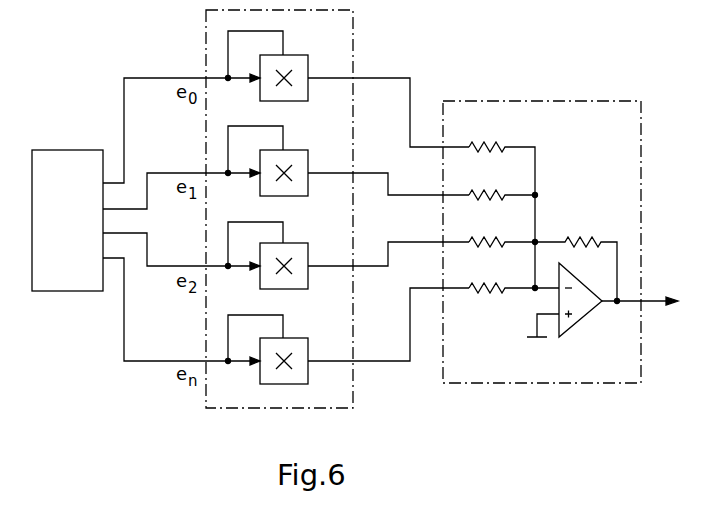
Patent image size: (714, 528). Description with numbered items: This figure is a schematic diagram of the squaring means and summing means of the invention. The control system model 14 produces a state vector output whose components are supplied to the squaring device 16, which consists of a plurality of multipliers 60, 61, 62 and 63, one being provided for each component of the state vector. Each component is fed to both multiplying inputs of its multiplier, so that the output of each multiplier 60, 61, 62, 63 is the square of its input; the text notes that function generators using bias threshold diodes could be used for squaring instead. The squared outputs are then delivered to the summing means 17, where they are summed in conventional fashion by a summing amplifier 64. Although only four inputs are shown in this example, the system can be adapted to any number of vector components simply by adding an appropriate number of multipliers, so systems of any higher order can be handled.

The control system model 14 is at (67, 220).
The squaring device 16 is at (353, 27).
The summing means 17 is at (515, 101).
The multiplier 60 is at (306, 93).
The multiplier 61 is at (306, 188).
The multiplier 62 is at (306, 281).
The multiplier 63 is at (306, 376).
The summing amplifier 64 is at (570, 325).